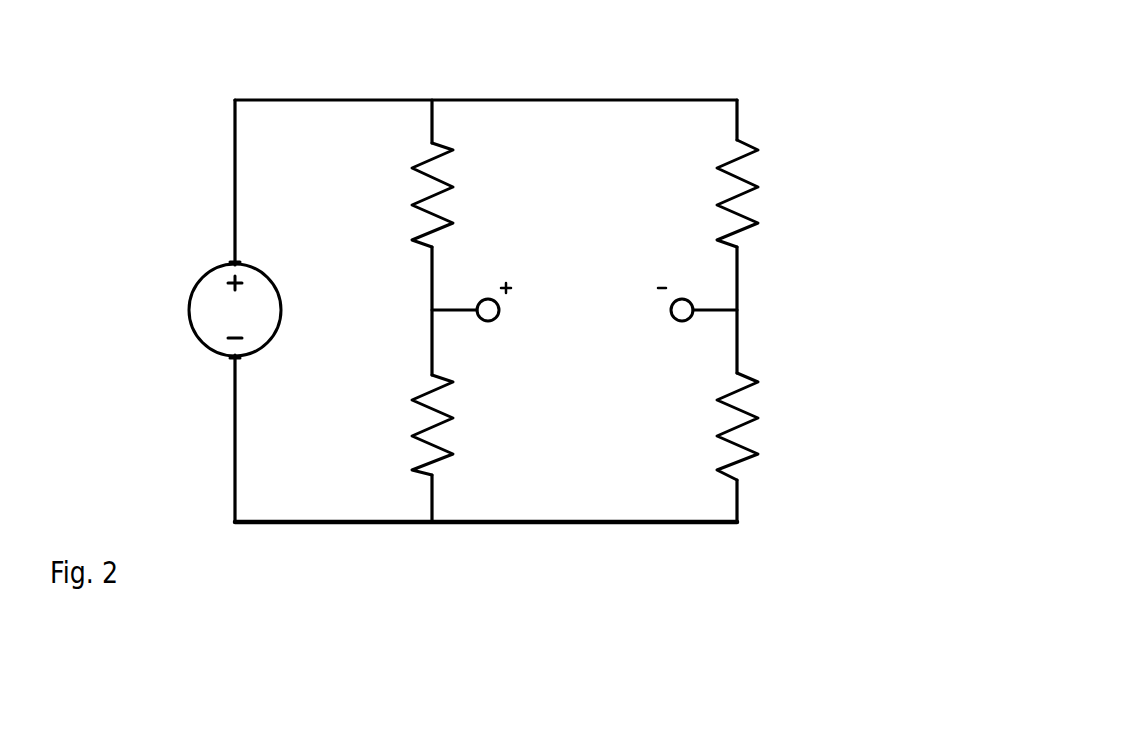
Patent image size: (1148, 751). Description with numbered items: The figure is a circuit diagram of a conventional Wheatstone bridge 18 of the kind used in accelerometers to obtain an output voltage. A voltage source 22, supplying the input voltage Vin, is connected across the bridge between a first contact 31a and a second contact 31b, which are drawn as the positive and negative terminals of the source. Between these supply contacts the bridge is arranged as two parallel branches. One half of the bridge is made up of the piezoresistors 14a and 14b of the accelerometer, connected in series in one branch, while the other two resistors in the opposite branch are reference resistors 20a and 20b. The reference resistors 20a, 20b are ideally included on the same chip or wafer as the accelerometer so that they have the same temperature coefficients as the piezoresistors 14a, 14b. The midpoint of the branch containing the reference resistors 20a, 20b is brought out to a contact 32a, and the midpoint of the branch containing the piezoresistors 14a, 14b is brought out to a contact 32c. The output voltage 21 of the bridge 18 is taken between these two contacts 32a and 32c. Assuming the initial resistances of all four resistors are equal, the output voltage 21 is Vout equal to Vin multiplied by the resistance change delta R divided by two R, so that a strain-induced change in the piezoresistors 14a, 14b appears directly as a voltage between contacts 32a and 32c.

The Wheatstone bridge 18 is at (855, 128).
The voltage source 22 is at (203, 330).
The contact 31a is at (235, 265).
The contact 31b is at (235, 355).
The reference resistor 20a is at (450, 167).
The reference resistor 20b is at (425, 438).
The piezoresistor 14a is at (740, 228).
The piezoresistor 14b is at (753, 455).
The output voltage 21 is at (593, 288).
The contact 32a is at (496, 320).
The contact 32c is at (693, 304).